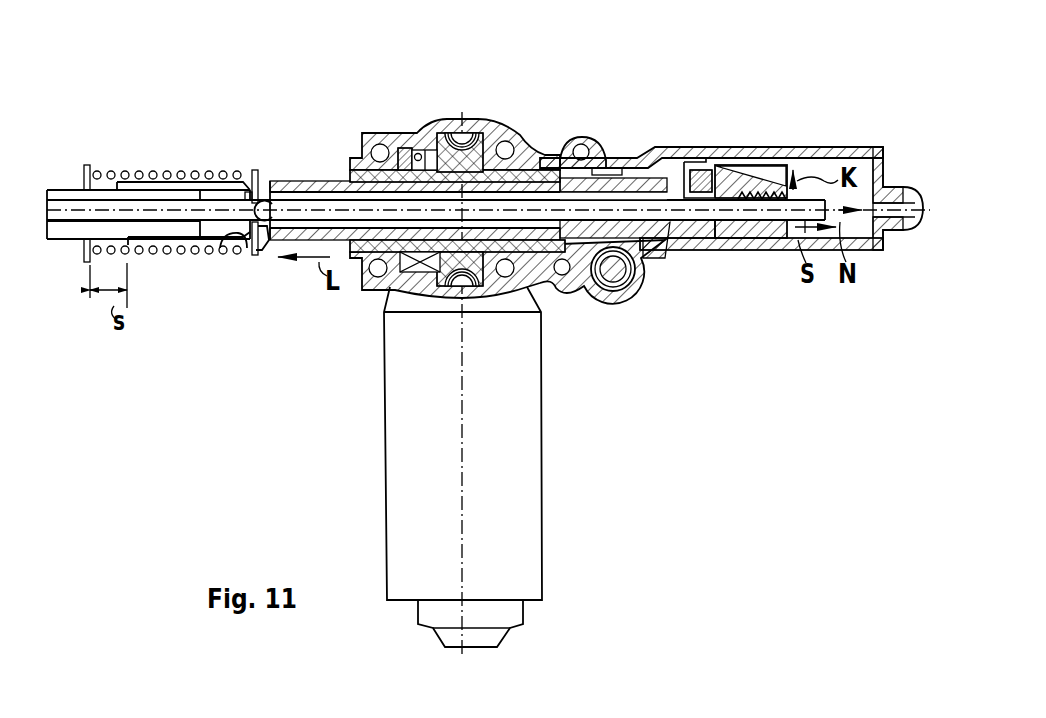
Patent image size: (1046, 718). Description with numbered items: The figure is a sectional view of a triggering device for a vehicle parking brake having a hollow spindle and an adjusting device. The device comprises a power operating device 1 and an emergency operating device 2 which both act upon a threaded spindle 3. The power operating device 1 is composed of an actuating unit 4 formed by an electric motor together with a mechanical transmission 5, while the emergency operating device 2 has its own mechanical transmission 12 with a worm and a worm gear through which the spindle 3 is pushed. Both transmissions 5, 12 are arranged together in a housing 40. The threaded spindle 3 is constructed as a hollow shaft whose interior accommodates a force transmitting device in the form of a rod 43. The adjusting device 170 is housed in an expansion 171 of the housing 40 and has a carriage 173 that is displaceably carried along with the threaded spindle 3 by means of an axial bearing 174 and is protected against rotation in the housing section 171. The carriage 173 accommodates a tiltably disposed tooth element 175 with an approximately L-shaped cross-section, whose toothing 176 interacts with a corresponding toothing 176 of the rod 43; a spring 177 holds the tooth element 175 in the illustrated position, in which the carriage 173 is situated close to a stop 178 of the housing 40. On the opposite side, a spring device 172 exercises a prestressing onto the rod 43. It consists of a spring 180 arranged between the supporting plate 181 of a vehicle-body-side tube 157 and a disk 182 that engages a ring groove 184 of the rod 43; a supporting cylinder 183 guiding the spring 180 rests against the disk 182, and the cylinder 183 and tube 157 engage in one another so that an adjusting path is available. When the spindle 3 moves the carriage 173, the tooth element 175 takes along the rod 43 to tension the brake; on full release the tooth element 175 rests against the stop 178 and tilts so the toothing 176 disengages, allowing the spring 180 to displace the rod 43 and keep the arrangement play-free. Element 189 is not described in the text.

The power operating device 1 is at (464, 114).
The emergency operating device 2 is at (599, 86).
The threaded spindle 3 is at (318, 181).
The actuating unit 4 is at (538, 455).
The mechanical transmission 5 is at (366, 298).
The mechanical transmission 12 is at (614, 300).
The housing 40 is at (394, 142).
The rod 43 is at (706, 214).
The vehicle-body-side tube 157 is at (65, 241).
The adjusting device 170 is at (749, 100).
The expansion of the housing 171 is at (876, 251).
The spring device 172 is at (193, 138).
The carriage 173 is at (757, 239).
The axial bearing 174 is at (650, 242).
The tooth element 175 is at (783, 184).
The toothing 176 is at (750, 192).
The spring 177 is at (705, 168).
The stop 178 is at (688, 163).
The spring 180 is at (138, 171).
The supporting plate 181 is at (87, 166).
The disk 182 is at (256, 170).
The supporting cylinder 183 is at (170, 255).
The ring groove 184 is at (263, 246).
The stop 189 is at (226, 245).